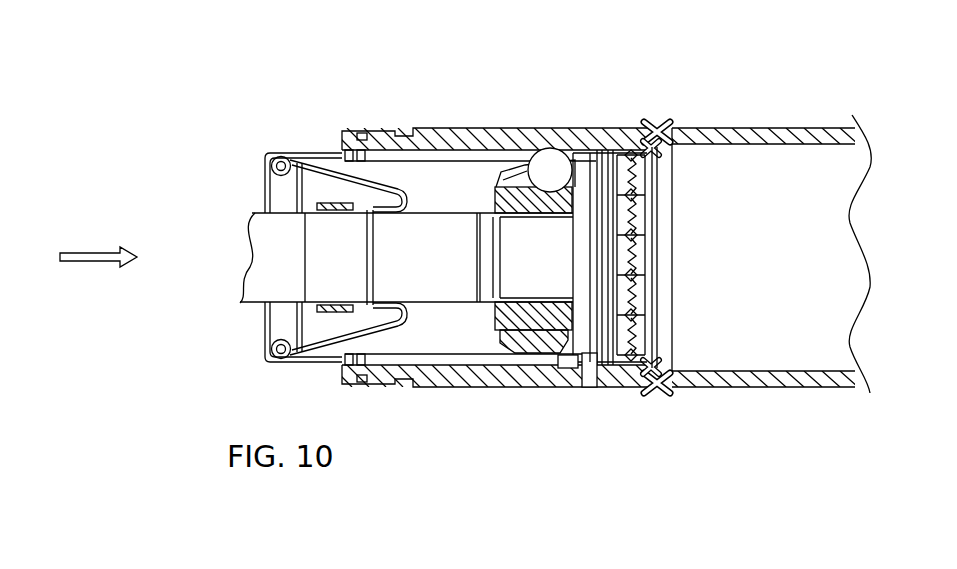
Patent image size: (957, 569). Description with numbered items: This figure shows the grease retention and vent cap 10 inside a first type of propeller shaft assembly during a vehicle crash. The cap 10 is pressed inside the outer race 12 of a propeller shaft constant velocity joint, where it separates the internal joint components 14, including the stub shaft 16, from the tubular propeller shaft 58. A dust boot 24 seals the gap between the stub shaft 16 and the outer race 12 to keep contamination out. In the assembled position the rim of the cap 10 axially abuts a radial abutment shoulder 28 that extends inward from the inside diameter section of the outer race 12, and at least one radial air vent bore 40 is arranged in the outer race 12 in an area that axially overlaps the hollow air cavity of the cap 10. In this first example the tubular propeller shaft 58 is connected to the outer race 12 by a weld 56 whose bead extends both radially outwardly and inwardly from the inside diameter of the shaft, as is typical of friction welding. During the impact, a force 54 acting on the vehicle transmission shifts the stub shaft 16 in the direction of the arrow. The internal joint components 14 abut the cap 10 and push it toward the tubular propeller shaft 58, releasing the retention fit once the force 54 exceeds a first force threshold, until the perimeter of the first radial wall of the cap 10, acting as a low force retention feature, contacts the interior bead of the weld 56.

The cap 10 is at (597, 147).
The outer race 12 is at (447, 137).
The internal joint components 14 is at (545, 160).
The stub shaft 16 is at (267, 227).
The dust boot 24 is at (317, 153).
The radial abutment shoulder 28 is at (556, 367).
The radial air vent bore 40 is at (587, 387).
The force 54 is at (90, 256).
The weld 56 is at (657, 123).
The tubular propeller shaft 58 is at (720, 128).